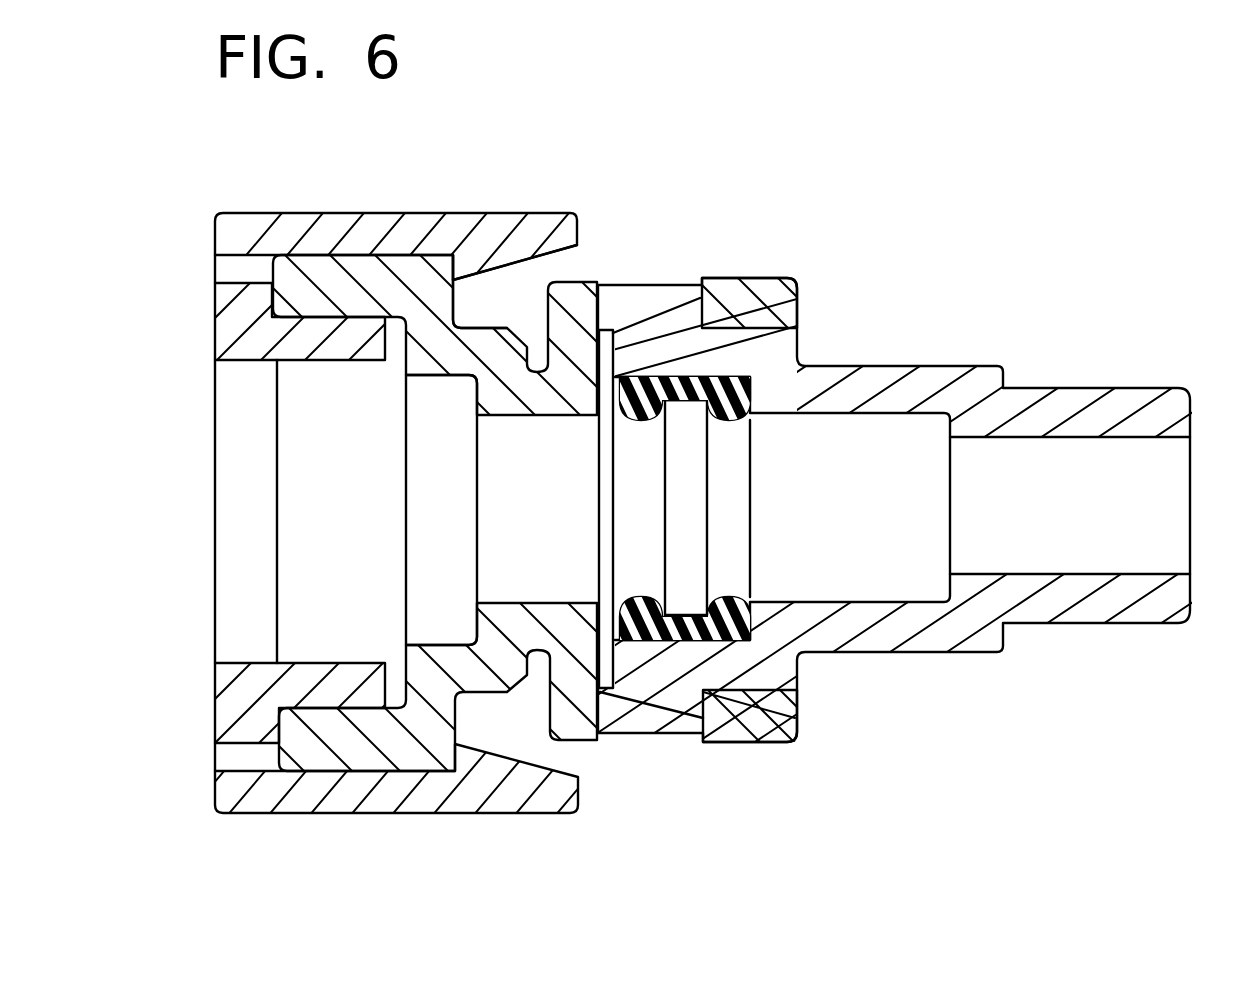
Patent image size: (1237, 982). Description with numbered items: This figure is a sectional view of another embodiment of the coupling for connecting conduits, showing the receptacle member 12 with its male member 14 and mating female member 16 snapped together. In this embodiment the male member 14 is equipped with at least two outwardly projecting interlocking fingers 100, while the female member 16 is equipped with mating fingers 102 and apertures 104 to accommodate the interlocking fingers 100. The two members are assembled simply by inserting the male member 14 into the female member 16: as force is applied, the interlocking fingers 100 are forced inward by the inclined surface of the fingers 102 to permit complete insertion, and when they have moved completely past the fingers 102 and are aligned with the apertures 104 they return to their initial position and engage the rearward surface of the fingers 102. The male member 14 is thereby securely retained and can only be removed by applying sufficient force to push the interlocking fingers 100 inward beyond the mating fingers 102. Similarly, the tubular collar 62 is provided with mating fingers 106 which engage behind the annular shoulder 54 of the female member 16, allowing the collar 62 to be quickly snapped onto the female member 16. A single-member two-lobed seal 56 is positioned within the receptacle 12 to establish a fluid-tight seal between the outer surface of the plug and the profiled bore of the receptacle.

The receptacle member 12 is at (806, 244).
The male member 14 is at (850, 366).
The female member 16 is at (575, 722).
The annular shoulder 54 is at (475, 300).
The two lobed seal 56 is at (669, 630).
The tubular collar 62 is at (300, 213).
The interlocking finger 100 is at (648, 320).
The mating finger 102 is at (795, 704).
The aperture 104 is at (683, 283).
The mating finger 106 is at (538, 260).